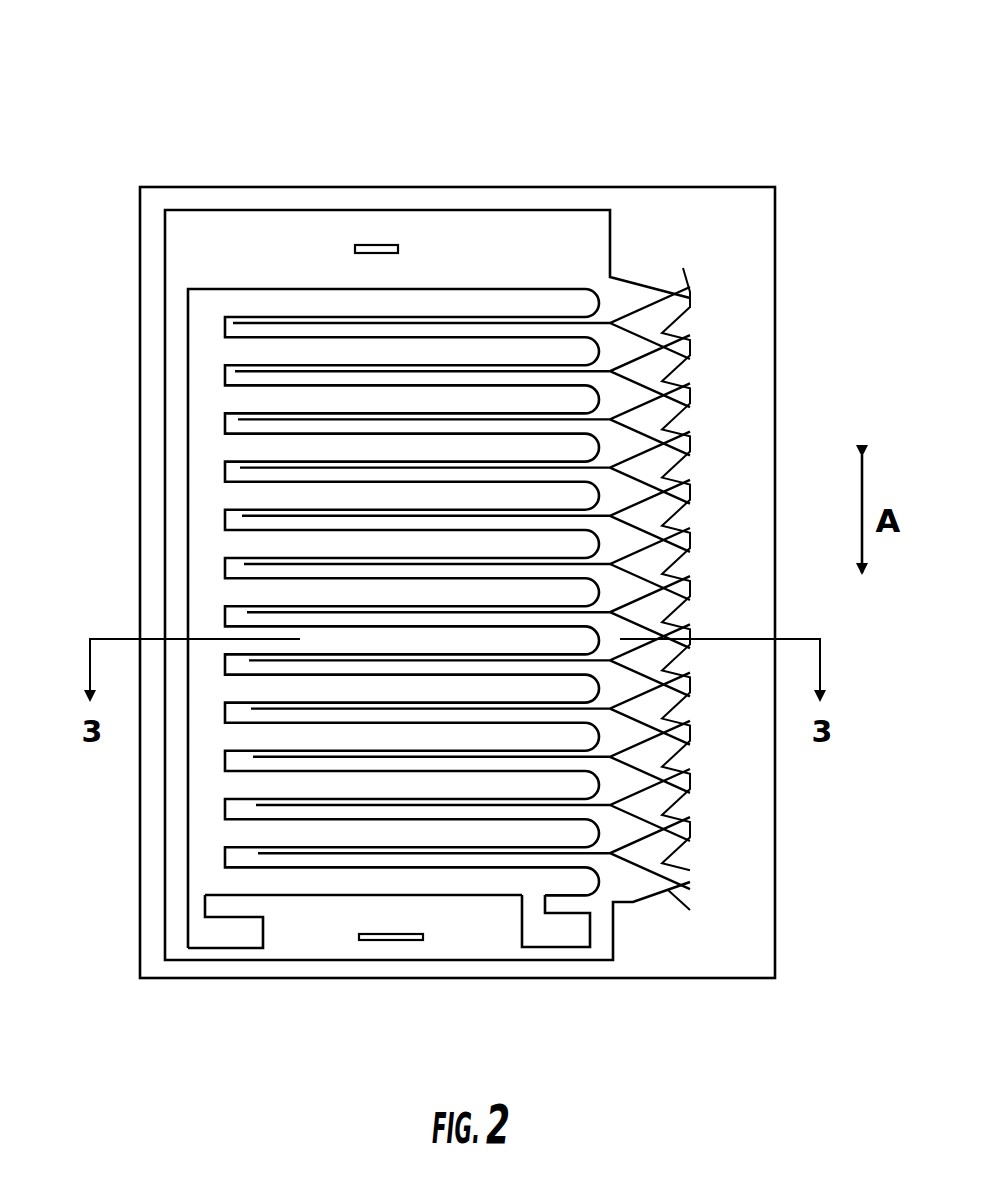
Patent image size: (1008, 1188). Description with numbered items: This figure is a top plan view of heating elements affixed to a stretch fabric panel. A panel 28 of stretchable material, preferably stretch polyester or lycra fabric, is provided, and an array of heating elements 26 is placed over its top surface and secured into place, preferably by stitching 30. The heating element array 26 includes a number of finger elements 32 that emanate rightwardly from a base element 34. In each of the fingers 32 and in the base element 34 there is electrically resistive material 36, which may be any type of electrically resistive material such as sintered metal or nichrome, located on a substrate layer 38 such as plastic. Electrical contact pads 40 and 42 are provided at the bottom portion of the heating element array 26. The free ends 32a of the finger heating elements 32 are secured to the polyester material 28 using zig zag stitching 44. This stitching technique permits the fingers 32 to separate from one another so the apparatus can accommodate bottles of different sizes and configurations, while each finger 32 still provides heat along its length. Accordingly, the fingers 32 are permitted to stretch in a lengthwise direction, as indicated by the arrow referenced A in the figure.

The heating element array 26 is at (476, 545).
The panel of stretchable material 28 is at (752, 257).
The stitching 30 is at (380, 243).
The finger elements 32 is at (455, 330).
The free ends of the finger heating elements 32a is at (688, 384).
The base element 34 is at (178, 535).
The electrically resistive material 36 is at (280, 300).
The substrate layer 38 is at (218, 245).
The electrical contact pad 40 is at (228, 935).
The electrical contact pad 42 is at (565, 933).
The zig zag stitching 44 is at (697, 331).